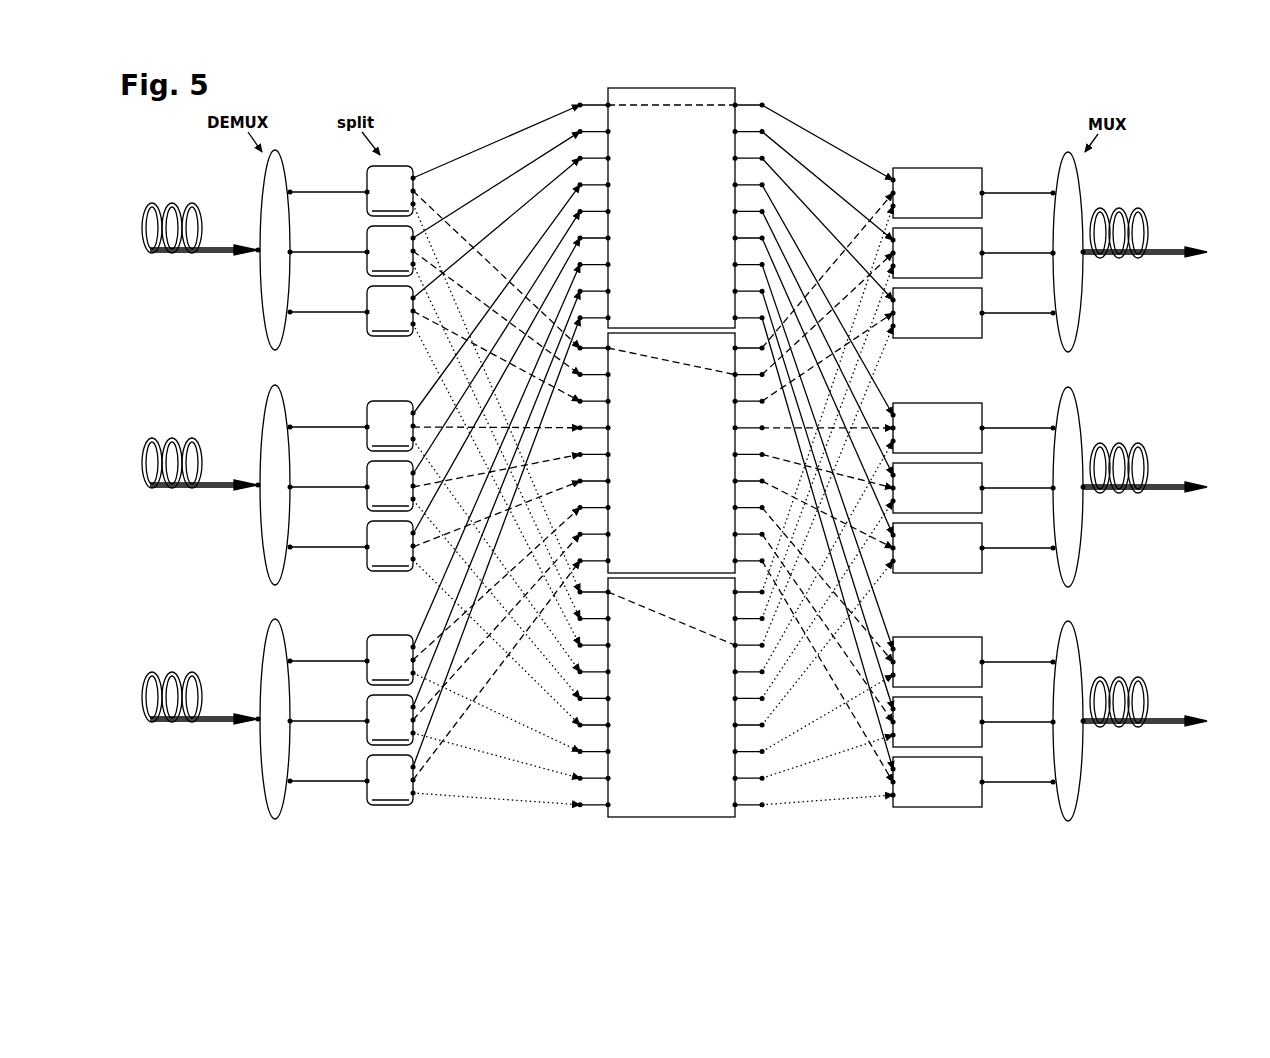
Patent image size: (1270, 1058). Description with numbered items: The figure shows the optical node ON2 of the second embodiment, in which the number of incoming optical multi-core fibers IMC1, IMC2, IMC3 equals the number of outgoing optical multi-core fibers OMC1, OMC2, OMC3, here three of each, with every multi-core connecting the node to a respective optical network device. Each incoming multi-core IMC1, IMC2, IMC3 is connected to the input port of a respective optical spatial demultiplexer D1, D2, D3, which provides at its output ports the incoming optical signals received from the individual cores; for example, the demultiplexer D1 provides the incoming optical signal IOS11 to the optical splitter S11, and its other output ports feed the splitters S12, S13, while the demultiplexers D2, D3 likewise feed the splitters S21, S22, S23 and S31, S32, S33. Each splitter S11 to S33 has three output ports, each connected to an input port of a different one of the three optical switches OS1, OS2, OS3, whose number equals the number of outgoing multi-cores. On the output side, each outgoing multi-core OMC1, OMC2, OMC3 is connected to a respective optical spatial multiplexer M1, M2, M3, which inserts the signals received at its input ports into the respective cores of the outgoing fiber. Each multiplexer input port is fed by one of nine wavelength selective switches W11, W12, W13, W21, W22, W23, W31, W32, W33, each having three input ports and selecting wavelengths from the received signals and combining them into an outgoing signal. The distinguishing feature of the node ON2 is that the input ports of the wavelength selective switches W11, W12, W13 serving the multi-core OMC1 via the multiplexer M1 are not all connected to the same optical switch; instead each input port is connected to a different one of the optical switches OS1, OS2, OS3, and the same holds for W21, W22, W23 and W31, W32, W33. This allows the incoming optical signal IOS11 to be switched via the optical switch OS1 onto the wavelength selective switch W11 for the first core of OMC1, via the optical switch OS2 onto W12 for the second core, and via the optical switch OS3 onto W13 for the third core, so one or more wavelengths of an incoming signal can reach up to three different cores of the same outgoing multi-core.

The optical node ON2 is at (428, 120).
The incoming optical multi-core fiber IMC1 is at (148, 207).
The incoming optical multi-core fiber IMC2 is at (186, 471).
The incoming optical multi-core fiber IMC3 is at (186, 705).
The optical spatial demultiplexer D1 is at (262, 195).
The optical spatial demultiplexer D2 is at (288, 485).
The optical spatial demultiplexer D3 is at (288, 719).
The incoming optical signal IOS11 is at (322, 190).
The optical splitter S11 is at (390, 191).
The optical splitter S12 is at (390, 251).
The optical splitter S13 is at (390, 311).
The optical splitter S21 is at (390, 426).
The optical splitter S22 is at (390, 486).
The optical splitter S23 is at (390, 546).
The optical splitter S31 is at (390, 660).
The optical splitter S32 is at (390, 720).
The optical splitter S33 is at (390, 780).
The optical switch OS1 is at (666, 143).
The optical switch OS2 is at (666, 408).
The optical switch OS3 is at (666, 668).
The wavelength selective switch W11 is at (985, 176).
The wavelength selective switch W12 is at (985, 236).
The wavelength selective switch W13 is at (985, 296).
The wavelength selective switch W21 is at (973, 415).
The wavelength selective switch W22 is at (973, 475).
The wavelength selective switch W23 is at (973, 535).
The wavelength selective switch W31 is at (973, 649).
The wavelength selective switch W32 is at (973, 709).
The wavelength selective switch W33 is at (973, 769).
The optical spatial multiplexer M1 is at (1082, 181).
The optical spatial multiplexer M2 is at (1099, 487).
The optical spatial multiplexer M3 is at (1099, 721).
The outgoing optical multi-core fiber OMC1 is at (1151, 215).
The outgoing optical multi-core fiber OMC2 is at (1153, 478).
The outgoing optical multi-core fiber OMC3 is at (1153, 712).